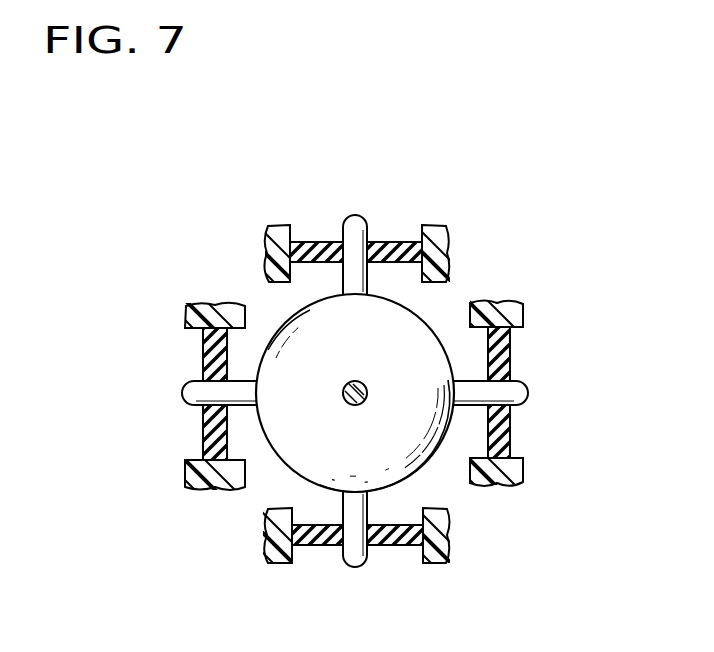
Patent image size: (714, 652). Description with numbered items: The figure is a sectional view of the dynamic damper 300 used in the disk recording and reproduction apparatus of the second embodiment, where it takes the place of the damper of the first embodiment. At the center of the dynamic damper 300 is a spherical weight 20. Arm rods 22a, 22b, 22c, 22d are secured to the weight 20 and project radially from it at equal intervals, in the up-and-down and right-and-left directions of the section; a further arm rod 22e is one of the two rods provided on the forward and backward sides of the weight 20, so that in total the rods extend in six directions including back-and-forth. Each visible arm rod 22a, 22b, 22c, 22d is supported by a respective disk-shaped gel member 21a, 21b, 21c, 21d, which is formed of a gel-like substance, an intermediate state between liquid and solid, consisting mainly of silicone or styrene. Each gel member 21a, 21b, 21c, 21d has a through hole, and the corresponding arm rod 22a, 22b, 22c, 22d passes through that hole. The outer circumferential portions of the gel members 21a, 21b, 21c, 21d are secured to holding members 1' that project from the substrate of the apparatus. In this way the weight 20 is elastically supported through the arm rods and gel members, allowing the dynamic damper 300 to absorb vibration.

The dynamic damper 300 is at (490, 224).
The spherical weight 20 is at (418, 330).
The arm rod 22e is at (347, 385).
The gel member 21a is at (503, 358).
The gel member 21b is at (405, 535).
The gel member 21c is at (205, 352).
The gel member 21d is at (316, 252).
The arm rod 22a is at (527, 395).
The arm rod 22b is at (355, 558).
The arm rod 22c is at (185, 395).
The arm rod 22d is at (360, 225).
The holding member 1' is at (356, 397).